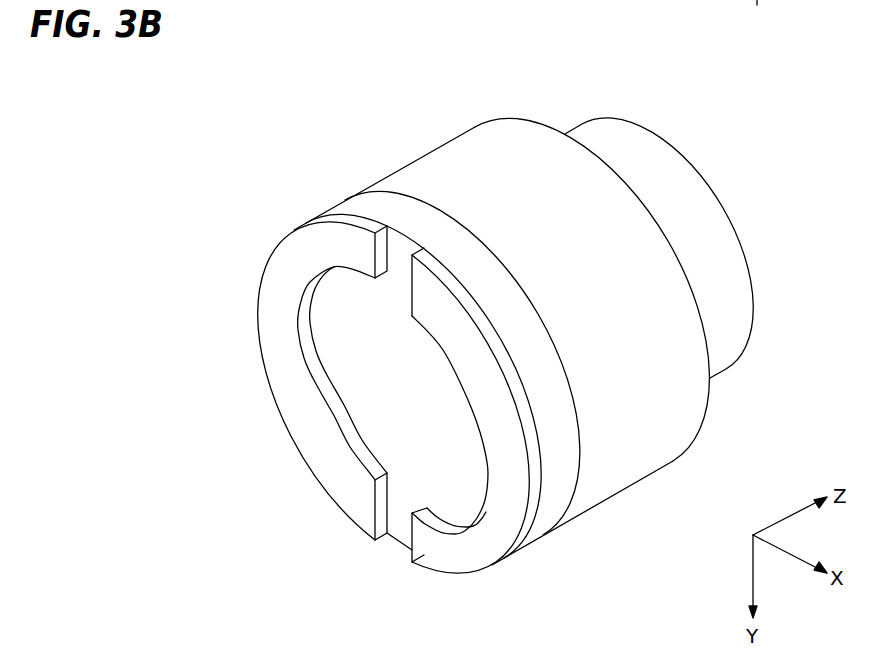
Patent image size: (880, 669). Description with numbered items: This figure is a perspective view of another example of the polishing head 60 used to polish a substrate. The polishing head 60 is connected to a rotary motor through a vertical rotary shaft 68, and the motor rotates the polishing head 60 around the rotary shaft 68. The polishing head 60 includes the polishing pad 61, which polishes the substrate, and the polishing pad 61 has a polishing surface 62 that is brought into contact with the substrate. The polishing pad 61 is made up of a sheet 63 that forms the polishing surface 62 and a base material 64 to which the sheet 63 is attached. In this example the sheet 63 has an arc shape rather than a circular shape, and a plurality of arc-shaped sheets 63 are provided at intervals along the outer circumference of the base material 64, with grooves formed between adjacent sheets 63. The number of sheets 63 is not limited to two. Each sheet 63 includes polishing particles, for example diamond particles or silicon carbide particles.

The polishing head 60 is at (514, 117).
The polishing pad 61 is at (449, 347).
The polishing surface 62 is at (323, 468).
The sheet 63 is at (342, 212).
The base material 64 is at (452, 344).
The rotary shaft 68 is at (690, 190).